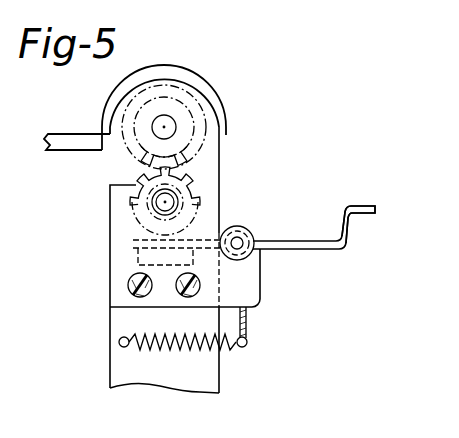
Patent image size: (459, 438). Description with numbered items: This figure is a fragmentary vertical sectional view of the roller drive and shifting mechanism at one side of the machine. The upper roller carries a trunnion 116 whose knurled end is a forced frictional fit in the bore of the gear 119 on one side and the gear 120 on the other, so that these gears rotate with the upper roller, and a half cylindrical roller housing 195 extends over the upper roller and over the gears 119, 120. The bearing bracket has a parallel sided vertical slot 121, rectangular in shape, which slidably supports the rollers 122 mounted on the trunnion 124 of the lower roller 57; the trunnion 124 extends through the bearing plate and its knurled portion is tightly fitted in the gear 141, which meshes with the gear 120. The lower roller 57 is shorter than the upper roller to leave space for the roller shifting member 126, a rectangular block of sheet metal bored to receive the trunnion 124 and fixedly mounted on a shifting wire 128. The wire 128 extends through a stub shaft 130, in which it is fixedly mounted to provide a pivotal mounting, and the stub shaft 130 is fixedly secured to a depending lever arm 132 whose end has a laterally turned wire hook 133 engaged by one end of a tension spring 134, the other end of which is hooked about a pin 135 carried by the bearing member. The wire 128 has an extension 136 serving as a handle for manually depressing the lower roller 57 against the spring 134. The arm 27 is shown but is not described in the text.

The arm 27 is at (73, 128).
The half cylindrical roller housing 195 is at (215, 95).
The trunnion 116 is at (174, 124).
The gear 120 is at (200, 148).
The gear 141 is at (182, 177).
The vertical slot 121 is at (179, 208).
The lower roller 57 is at (160, 206).
The trunnion 124 is at (150, 220).
The roller 122 is at (136, 243).
The roller shifting member 126 is at (135, 264).
The stub shaft 130 is at (256, 228).
The wire extension 136 is at (316, 240).
The shifting wire 128 is at (288, 251).
The depending lever arm 132 is at (258, 296).
The wire hook 133 is at (248, 327).
The tension spring 134 is at (221, 368).
The pin 135 is at (121, 345).
The gear 119 is at (206, 386).